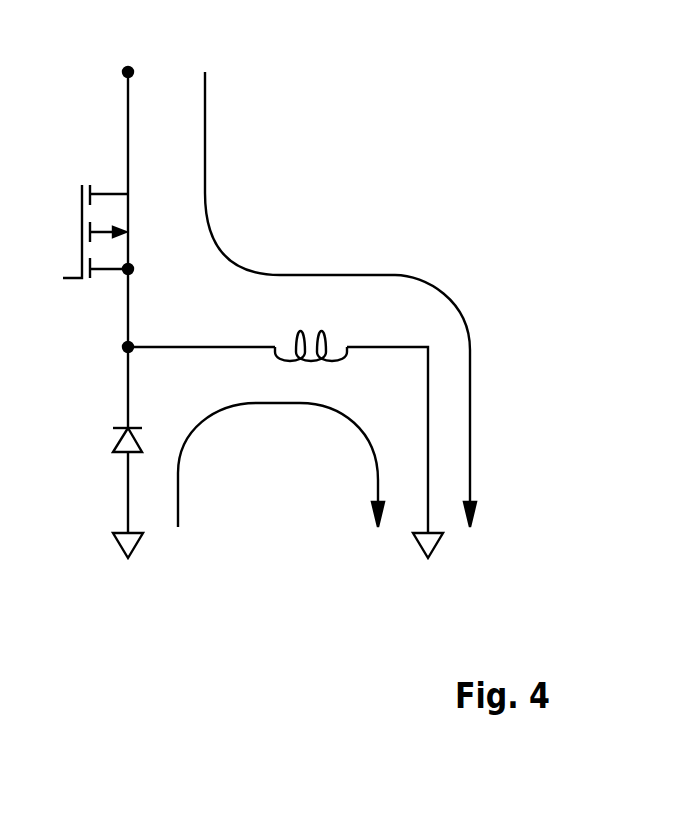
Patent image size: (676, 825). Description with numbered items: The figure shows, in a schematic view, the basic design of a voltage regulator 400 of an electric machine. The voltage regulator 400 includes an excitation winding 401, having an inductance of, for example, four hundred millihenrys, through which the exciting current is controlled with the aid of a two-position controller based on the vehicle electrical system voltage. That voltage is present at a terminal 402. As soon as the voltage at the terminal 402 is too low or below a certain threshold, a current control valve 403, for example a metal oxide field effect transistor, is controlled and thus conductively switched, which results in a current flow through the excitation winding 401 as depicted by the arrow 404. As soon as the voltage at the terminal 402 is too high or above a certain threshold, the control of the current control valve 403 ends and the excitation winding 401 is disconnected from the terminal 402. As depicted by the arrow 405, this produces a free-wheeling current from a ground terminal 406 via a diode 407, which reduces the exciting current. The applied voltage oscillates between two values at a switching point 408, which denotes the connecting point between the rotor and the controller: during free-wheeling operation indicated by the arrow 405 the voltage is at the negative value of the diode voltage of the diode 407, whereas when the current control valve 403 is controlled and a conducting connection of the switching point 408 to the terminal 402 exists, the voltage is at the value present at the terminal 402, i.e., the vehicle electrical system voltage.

The voltage regulator 400 is at (428, 203).
The excitation winding 401 is at (335, 333).
The terminal 402 is at (128, 67).
The current control valve 403 is at (100, 165).
The arrow 404 is at (472, 390).
The arrow 405 is at (214, 420).
The ground terminal 406 is at (128, 530).
The diode 407 is at (108, 436).
The switching point 408 is at (132, 342).